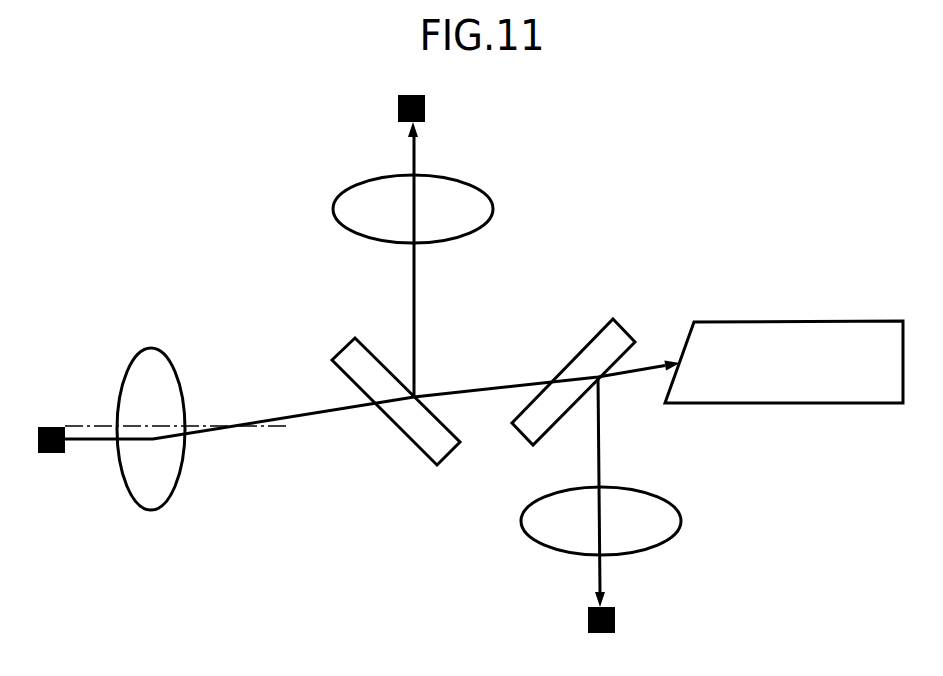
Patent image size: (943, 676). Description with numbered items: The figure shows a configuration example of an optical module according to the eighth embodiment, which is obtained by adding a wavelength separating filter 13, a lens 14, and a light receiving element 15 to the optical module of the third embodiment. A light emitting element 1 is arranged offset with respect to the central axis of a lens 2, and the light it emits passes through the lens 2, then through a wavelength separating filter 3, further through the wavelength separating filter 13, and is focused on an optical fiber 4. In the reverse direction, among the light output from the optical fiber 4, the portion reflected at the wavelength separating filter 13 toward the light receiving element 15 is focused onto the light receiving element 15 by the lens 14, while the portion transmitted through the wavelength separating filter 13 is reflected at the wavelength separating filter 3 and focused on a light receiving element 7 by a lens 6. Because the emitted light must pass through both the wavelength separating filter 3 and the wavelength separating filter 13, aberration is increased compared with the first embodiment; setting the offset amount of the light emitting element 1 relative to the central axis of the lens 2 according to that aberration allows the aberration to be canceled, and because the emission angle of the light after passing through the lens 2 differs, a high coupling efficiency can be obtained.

The light emitting element 1 is at (50, 427).
The lens 2 is at (152, 348).
The wavelength separating filter 3 is at (338, 352).
The optical fiber 4 is at (747, 322).
The lens 6 is at (493, 205).
The light receiving element 7 is at (425, 108).
The wavelength separating filter 13 is at (583, 350).
The lens 14 is at (681, 516).
The light receiving element 15 is at (615, 618).